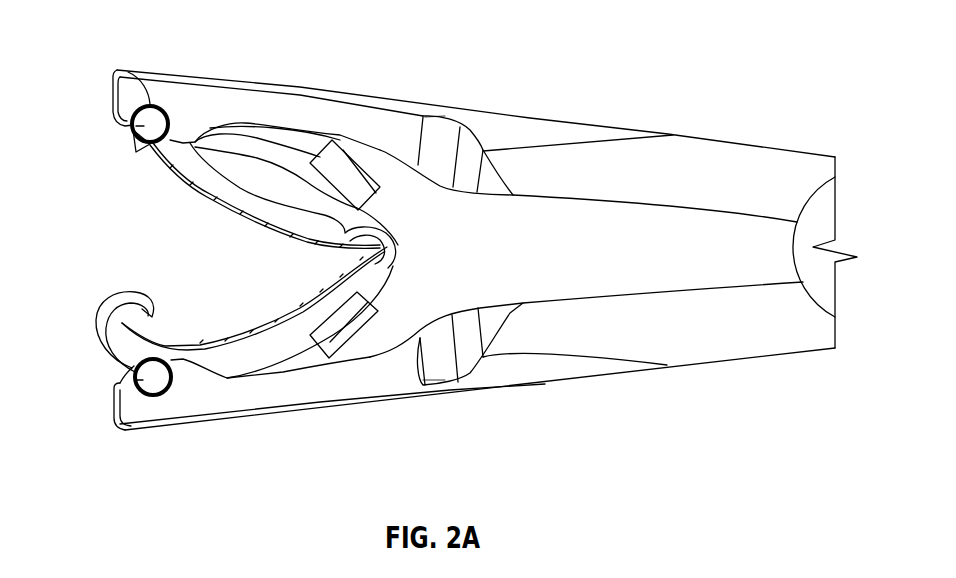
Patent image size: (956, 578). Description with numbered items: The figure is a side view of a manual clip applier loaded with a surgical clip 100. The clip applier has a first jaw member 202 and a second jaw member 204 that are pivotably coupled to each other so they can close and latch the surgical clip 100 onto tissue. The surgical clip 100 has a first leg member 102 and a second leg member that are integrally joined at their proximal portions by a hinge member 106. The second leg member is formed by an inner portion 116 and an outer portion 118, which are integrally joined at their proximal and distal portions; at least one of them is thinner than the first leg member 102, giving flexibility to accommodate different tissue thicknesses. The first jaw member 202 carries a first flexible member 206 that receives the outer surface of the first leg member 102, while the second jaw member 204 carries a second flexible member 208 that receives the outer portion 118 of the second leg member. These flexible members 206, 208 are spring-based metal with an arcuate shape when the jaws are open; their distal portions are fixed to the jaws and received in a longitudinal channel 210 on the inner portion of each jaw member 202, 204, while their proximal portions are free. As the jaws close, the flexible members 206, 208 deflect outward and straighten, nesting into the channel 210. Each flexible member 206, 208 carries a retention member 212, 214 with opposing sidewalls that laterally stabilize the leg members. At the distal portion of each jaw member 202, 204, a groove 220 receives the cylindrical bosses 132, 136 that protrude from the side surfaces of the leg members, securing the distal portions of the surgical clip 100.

The surgical clip 100 is at (92, 349).
The first leg member 102 is at (221, 342).
The hinge member 106 is at (398, 248).
The inner portion 116 is at (200, 187).
The outer portion 118 is at (230, 140).
The boss 132 is at (134, 380).
The boss 136 is at (136, 126).
The first jaw member 202 is at (530, 378).
The second jaw member 204 is at (525, 130).
The first flexible member 206 is at (312, 362).
The second flexible member 208 is at (313, 137).
The longitudinal channel 210 is at (398, 182).
The retention member 212 is at (355, 348).
The retention member 214 is at (343, 172).
The groove 220 is at (136, 73).